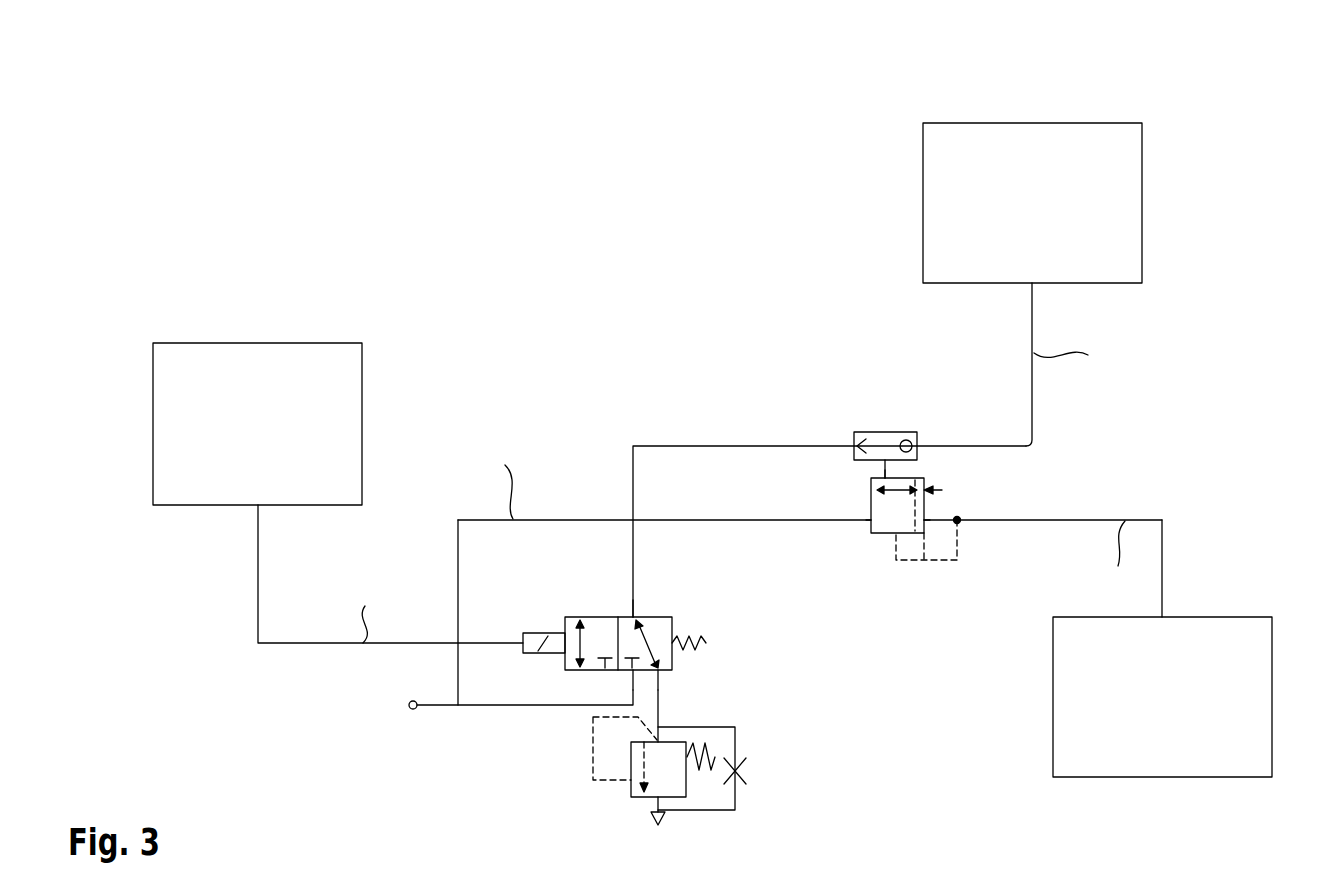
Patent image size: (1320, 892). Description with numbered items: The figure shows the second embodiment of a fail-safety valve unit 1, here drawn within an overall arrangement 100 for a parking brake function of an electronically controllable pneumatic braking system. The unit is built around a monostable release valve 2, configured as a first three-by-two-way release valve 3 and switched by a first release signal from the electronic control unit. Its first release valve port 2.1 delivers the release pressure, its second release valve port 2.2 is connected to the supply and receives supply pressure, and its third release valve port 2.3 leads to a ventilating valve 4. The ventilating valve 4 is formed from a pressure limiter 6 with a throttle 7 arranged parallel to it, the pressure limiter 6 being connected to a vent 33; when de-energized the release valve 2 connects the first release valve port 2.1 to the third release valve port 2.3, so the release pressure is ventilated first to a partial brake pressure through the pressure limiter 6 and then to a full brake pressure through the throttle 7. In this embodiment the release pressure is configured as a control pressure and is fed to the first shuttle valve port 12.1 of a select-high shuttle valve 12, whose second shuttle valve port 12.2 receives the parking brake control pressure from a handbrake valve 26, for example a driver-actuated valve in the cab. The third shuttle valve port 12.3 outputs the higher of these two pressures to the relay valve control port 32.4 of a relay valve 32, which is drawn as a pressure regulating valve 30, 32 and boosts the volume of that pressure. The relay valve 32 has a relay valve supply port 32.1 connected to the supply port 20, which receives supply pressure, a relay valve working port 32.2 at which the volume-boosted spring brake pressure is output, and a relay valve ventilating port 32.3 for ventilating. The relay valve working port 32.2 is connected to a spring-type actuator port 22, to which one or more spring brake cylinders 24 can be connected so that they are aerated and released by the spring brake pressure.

The vehicle / overall system 100 is at (398, 158).
The fail-safety valve unit 1 is at (520, 408).
The release valve 2 is at (580, 617).
The first 3/2-way release valve 3 is at (614, 643).
The first release valve port 2.1 is at (636, 617).
The second release valve port 2.2 is at (602, 672).
The third release valve port 2.3 is at (660, 672).
The ventilating valve 4 is at (566, 802).
The pressure limiter 6 is at (630, 790).
The throttle 7 is at (746, 771).
The shuttle valve 12 is at (885, 432).
The first shuttle valve port 12.1 is at (857, 446).
The second shuttle valve port 12.2 is at (908, 440).
The third shuttle valve port 12.3 is at (915, 460).
The supply port 20 is at (413, 710).
The spring-type actuator port 22 is at (1163, 617).
The spring brake cylinder 24 is at (1177, 714).
The handbrake valve 26 is at (1047, 219).
The pressure regulating valve 30 is at (925, 480).
The relay valve 32 is at (905, 541).
The relay valve supply port 32.1 is at (870, 517).
The relay valve working port 32.2 is at (938, 548).
The relay valve ventilating port 32.3 is at (928, 493).
The relay valve control port 32.4 is at (880, 470).
The vent 33 is at (942, 490).